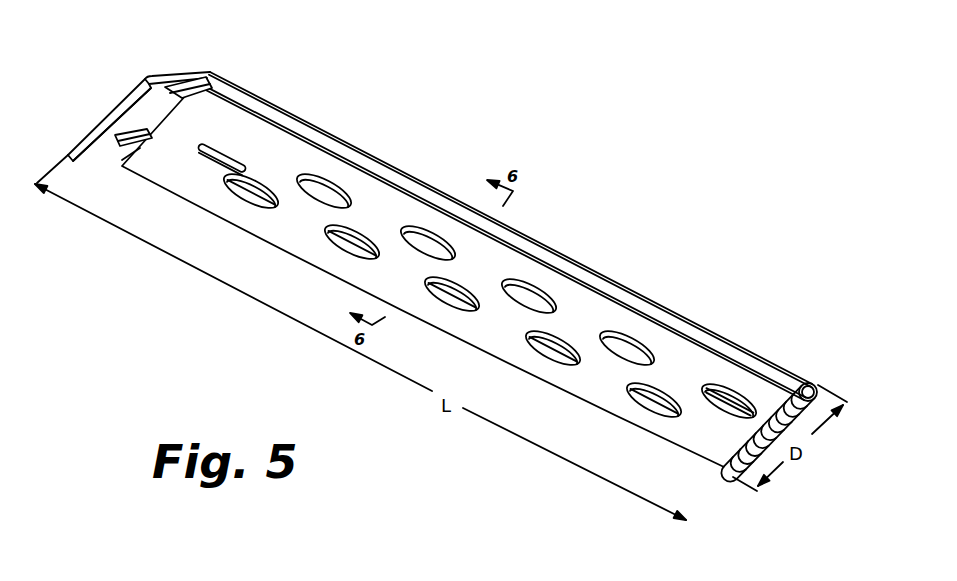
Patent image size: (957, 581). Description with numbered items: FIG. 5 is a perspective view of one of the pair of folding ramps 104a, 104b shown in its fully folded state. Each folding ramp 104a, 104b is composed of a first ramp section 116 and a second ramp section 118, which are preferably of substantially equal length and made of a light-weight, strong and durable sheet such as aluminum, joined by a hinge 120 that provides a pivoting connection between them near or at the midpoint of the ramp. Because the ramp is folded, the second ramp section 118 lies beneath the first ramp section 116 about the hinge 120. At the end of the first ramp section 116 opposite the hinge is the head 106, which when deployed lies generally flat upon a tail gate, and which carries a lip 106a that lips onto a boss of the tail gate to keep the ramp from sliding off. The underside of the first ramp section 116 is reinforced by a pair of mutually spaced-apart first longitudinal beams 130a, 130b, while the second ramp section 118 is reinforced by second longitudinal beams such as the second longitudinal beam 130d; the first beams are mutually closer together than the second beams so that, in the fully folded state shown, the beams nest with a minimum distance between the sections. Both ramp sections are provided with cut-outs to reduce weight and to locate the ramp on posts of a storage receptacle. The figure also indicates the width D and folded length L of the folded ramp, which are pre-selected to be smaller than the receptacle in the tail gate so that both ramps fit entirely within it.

The folding ramp 104a is at (431, 295).
The folding ramp 104b is at (431, 295).
The head 106 is at (176, 150).
The lip 106a is at (123, 151).
The first ramp section 116 is at (373, 157).
The second ramp section 118 is at (295, 227).
The hinge 120 is at (730, 492).
The first longitudinal beam 130a is at (120, 148).
The first longitudinal beam 130b is at (192, 86).
The second longitudinal beam 130d is at (292, 127).